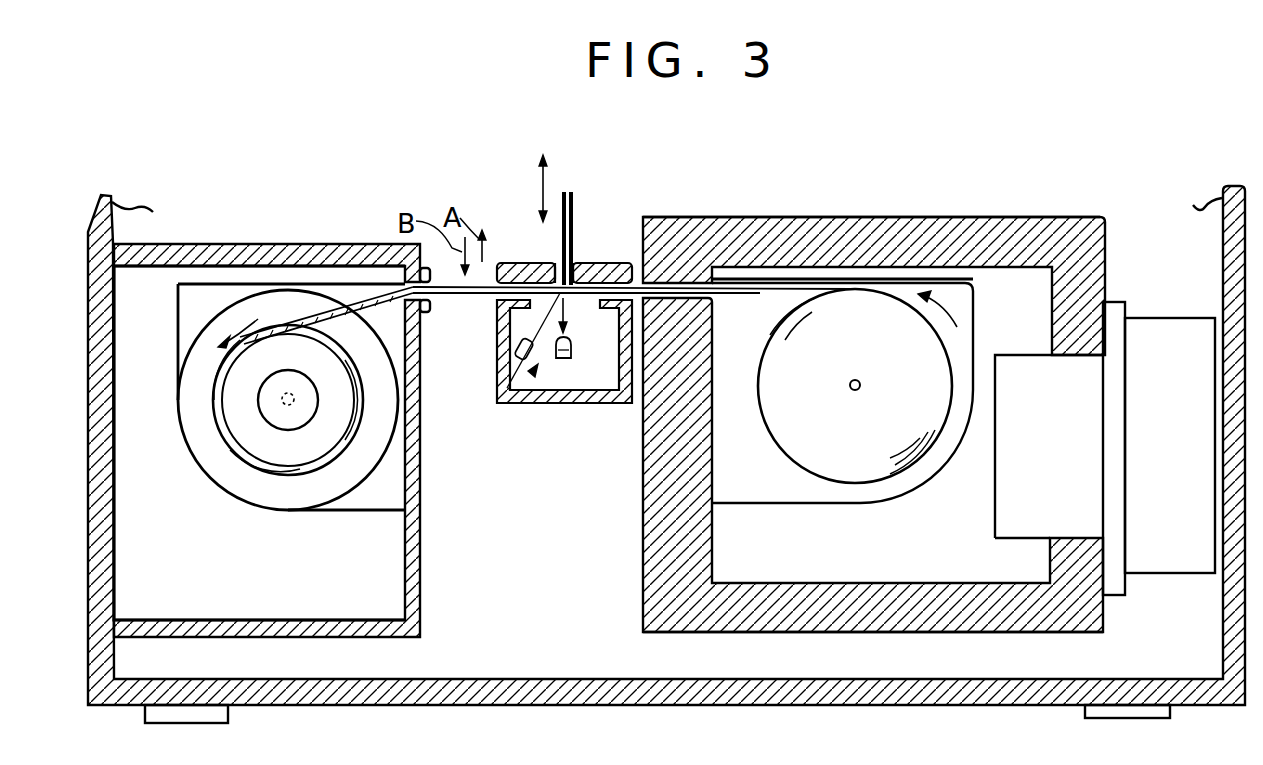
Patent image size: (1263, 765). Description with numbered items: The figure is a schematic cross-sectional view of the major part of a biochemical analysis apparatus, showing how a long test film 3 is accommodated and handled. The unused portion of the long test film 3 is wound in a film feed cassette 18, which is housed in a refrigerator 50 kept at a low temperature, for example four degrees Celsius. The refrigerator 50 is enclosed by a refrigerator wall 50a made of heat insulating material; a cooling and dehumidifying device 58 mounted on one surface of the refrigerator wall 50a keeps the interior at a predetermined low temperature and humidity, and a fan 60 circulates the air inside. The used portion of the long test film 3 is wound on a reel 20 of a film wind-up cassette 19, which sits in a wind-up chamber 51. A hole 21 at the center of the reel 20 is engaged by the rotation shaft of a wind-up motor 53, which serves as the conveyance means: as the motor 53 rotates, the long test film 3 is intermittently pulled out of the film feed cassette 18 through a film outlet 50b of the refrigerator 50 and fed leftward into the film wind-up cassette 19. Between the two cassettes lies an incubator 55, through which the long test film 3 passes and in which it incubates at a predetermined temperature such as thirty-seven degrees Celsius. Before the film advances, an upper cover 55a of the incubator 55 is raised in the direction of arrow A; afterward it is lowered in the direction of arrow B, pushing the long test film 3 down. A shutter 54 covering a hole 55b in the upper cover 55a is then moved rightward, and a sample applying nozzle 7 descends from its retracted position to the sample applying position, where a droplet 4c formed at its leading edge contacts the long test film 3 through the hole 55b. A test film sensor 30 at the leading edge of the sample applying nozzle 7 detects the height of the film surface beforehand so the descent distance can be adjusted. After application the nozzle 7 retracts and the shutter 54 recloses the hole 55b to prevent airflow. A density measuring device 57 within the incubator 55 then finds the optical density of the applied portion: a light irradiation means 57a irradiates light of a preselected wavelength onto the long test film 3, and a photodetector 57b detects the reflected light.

The long test film 3 is at (743, 289).
The sample applying nozzle 7 is at (553, 192).
The droplet 4c is at (572, 296).
The film feed cassette 18 is at (788, 488).
The film wind-up cassette 19 is at (176, 323).
The reel 20 is at (260, 472).
The hole 21 is at (283, 400).
The test film sensor 30 is at (551, 264).
The refrigerator 50 is at (913, 555).
The refrigerator wall 50a is at (690, 613).
The film outlet 50b is at (653, 282).
The wind-up chamber 51 is at (338, 603).
The wind-up motor 53 is at (277, 413).
The shutter 54 is at (583, 262).
The incubator 55 is at (522, 398).
The upper cover 55a is at (510, 263).
The hole 55b is at (578, 262).
The density measuring device 57 is at (500, 388).
The light irradiation means 57a is at (497, 362).
The photodetector 57b is at (565, 360).
The cooling and dehumidifying device 58 is at (1160, 555).
The fan 60 is at (1013, 485).